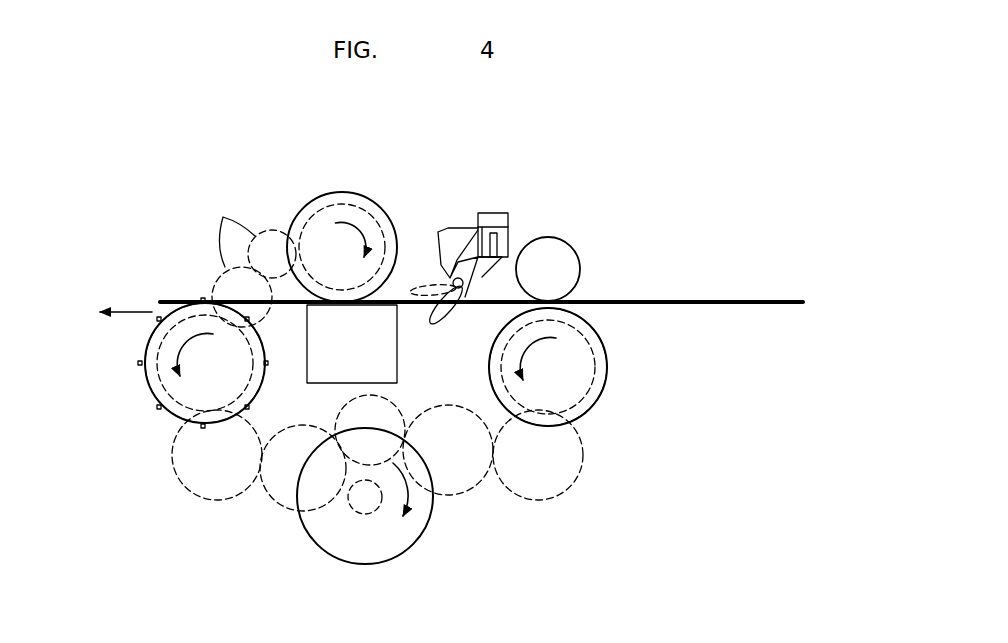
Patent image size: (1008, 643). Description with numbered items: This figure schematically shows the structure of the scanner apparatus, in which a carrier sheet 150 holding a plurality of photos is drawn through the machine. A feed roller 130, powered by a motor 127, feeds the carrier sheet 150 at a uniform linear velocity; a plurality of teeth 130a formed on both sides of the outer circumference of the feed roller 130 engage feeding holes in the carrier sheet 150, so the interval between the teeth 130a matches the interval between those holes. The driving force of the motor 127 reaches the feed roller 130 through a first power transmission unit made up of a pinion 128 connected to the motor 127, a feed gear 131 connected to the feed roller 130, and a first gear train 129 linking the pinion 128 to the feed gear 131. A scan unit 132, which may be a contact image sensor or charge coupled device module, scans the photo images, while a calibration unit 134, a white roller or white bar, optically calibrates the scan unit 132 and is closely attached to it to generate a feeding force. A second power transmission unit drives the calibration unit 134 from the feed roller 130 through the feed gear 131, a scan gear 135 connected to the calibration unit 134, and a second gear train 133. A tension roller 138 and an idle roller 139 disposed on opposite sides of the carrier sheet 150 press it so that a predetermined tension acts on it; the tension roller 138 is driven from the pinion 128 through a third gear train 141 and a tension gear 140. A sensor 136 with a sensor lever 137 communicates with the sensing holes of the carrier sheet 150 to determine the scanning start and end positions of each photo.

The motor 127 is at (332, 552).
The pinion 128 is at (370, 514).
The first gear train 129 is at (278, 503).
The feed roller 130 is at (148, 339).
The teeth 130a is at (138, 364).
The feed gear 131 is at (145, 388).
The scan unit 132 is at (397, 363).
The second gear train 133 is at (223, 217).
The calibration unit 134 is at (323, 200).
The scan gear 135 is at (365, 221).
The sensor 136 is at (460, 218).
The sensor lever 137 is at (443, 290).
The tension roller 138 is at (607, 368).
The idle roller 139 is at (558, 243).
The tension gear 140 is at (590, 400).
The third gear train 141 is at (387, 460).
The carrier sheet 150 is at (735, 298).